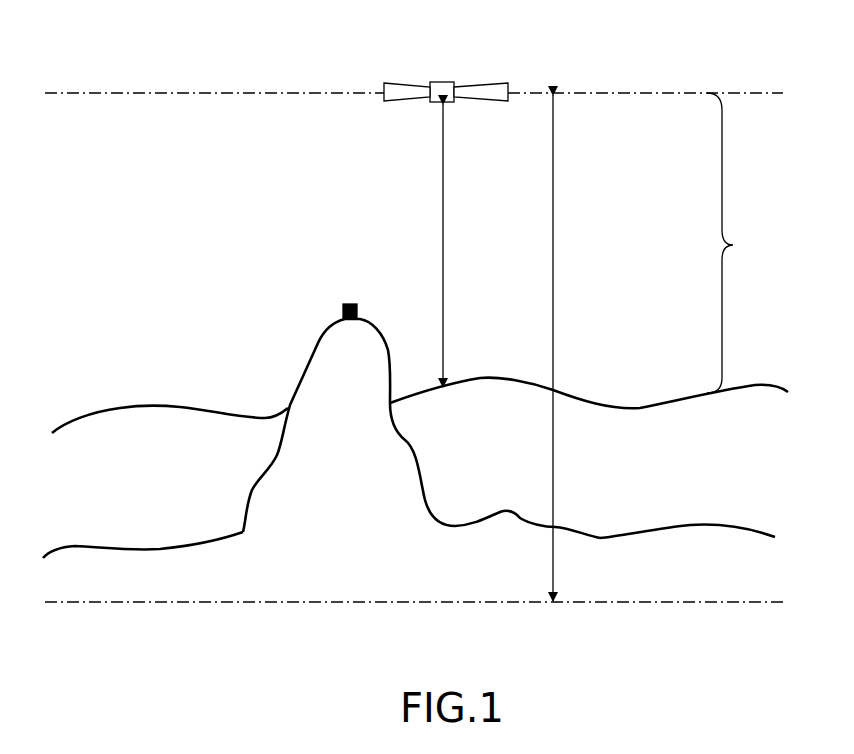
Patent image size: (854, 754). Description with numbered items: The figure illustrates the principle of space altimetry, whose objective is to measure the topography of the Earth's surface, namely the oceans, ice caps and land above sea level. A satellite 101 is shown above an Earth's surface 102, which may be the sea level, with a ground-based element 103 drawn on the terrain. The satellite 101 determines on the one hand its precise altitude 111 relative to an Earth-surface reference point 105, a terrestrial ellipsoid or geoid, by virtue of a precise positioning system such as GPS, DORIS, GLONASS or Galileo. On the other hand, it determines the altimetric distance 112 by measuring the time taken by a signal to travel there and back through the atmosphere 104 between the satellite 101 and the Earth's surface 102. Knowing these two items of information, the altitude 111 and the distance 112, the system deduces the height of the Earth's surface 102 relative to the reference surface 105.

The satellite 101 is at (441, 82).
The Earth's surface 102 is at (163, 408).
The ground station 103 is at (340, 312).
The atmosphere 104 is at (746, 243).
The Earth-surface reference point 105 is at (190, 602).
The precise altitude 111 is at (554, 158).
The altimetric distance 112 is at (443, 208).